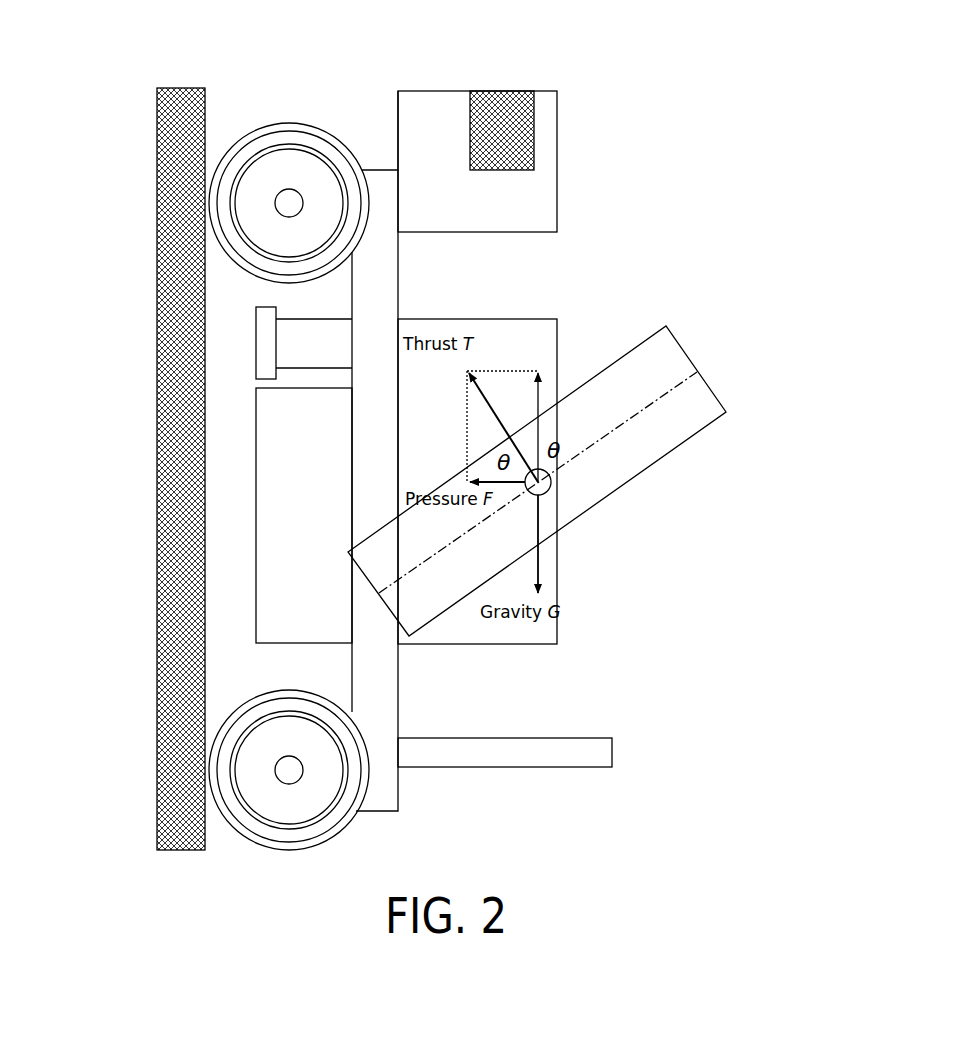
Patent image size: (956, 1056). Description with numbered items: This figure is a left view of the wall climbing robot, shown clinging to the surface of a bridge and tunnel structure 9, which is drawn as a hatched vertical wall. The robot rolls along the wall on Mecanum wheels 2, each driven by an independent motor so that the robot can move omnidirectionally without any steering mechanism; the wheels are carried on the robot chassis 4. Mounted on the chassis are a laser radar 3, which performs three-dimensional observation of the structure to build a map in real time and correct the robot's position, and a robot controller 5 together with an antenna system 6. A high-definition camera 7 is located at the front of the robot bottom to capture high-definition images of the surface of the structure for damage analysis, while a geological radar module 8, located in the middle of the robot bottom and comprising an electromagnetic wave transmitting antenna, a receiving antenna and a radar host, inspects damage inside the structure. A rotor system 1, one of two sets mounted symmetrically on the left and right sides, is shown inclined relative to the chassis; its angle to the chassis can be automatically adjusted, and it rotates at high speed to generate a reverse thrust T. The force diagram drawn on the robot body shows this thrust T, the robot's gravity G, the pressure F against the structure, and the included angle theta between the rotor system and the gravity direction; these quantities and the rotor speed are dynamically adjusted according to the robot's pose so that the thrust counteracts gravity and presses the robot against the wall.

The rotor system 1 is at (643, 450).
The Mecanum wheel 2 is at (289, 203).
The laser radar 3 is at (418, 120).
The robot chassis 4 is at (375, 700).
The robot controller 5 is at (492, 347).
The antenna system 6 is at (546, 755).
The high-definition camera 7 is at (293, 358).
The geological radar module 8 is at (290, 553).
The bridge and tunnel structure 9 is at (157, 647).